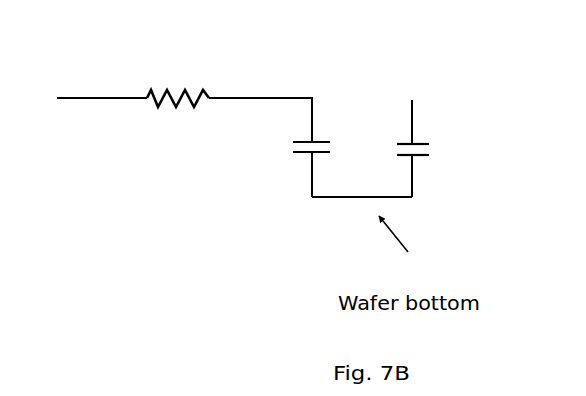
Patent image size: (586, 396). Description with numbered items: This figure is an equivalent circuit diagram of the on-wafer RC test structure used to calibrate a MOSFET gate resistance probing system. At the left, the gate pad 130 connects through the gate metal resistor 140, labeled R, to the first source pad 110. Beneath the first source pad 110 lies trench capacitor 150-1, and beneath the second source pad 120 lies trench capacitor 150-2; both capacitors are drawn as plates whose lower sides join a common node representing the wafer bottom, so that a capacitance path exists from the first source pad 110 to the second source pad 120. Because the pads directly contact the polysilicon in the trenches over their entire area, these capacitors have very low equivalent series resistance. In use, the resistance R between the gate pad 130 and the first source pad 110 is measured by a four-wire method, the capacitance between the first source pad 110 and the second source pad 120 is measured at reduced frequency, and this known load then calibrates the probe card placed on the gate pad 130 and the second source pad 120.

The gate pad 130 is at (70, 79).
The gate metal resistor 140 is at (178, 97).
The first source pad 110 is at (310, 83).
The trench capacitor 150-1 is at (288, 157).
The trench capacitor 150-2 is at (436, 147).
The second source pad 120 is at (422, 103).